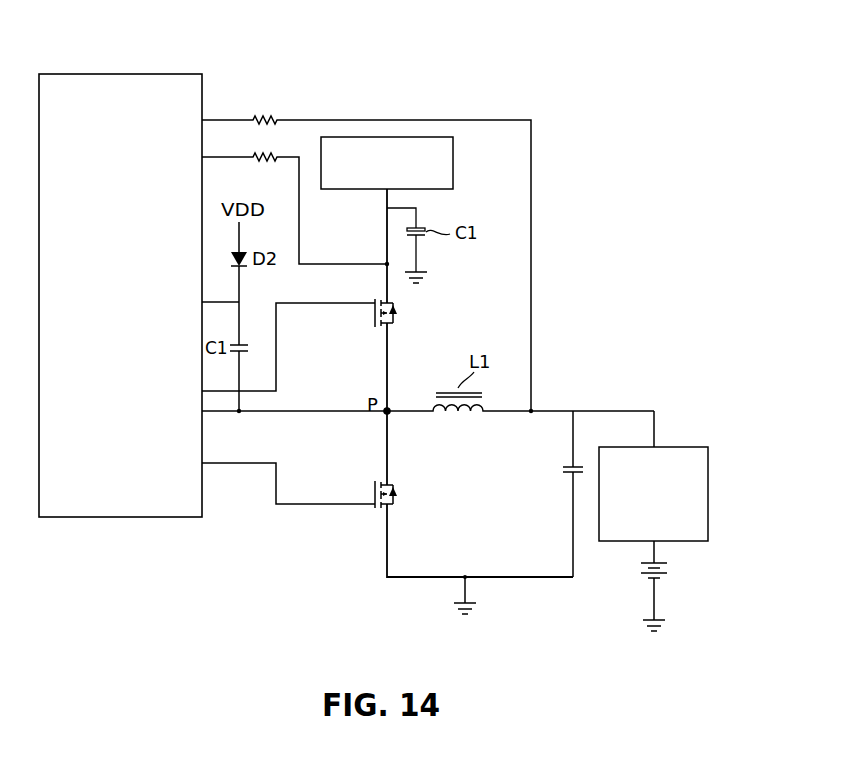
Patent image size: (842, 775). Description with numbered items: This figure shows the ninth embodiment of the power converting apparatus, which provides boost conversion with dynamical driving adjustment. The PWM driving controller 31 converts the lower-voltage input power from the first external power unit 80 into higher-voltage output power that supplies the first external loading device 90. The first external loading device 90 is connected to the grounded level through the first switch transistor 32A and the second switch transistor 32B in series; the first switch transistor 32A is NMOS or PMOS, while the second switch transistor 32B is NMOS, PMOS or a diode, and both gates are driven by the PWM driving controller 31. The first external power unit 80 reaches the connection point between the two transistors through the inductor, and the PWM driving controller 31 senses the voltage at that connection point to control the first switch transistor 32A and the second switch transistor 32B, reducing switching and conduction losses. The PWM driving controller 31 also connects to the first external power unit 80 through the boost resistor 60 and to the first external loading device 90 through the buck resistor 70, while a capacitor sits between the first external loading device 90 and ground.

The PWM driving controller 31 is at (121, 518).
The first switch transistor 32A is at (372, 507).
The second switch transistor 32B is at (397, 312).
The boost resistor 60 is at (270, 165).
The buck resistor 70 is at (263, 114).
The first external power unit 80 is at (678, 446).
The first external loading device 90 is at (390, 136).